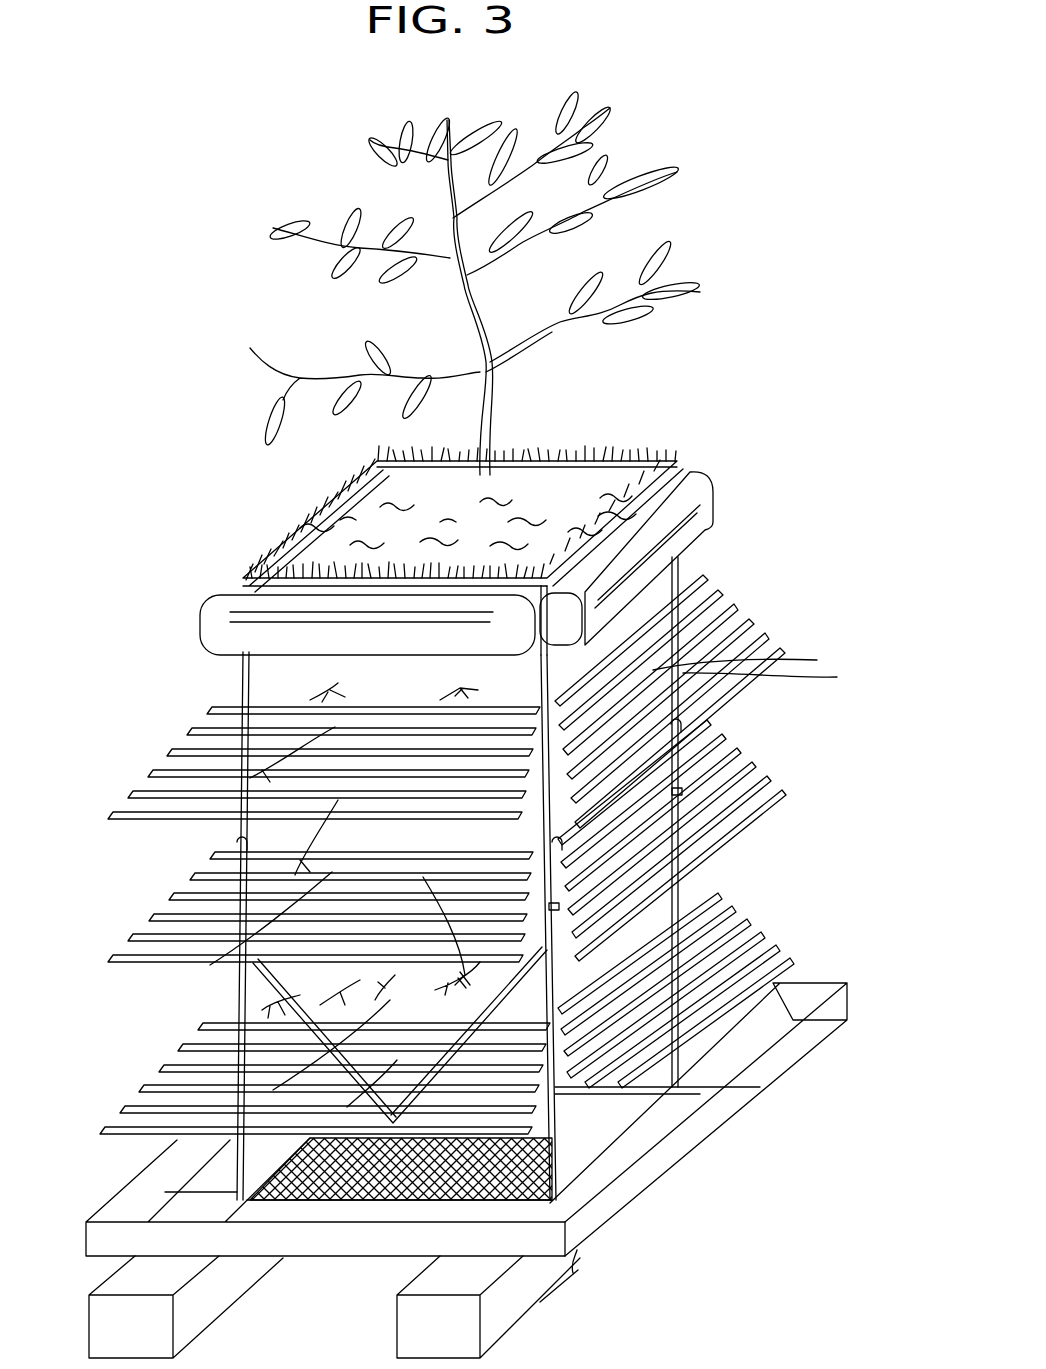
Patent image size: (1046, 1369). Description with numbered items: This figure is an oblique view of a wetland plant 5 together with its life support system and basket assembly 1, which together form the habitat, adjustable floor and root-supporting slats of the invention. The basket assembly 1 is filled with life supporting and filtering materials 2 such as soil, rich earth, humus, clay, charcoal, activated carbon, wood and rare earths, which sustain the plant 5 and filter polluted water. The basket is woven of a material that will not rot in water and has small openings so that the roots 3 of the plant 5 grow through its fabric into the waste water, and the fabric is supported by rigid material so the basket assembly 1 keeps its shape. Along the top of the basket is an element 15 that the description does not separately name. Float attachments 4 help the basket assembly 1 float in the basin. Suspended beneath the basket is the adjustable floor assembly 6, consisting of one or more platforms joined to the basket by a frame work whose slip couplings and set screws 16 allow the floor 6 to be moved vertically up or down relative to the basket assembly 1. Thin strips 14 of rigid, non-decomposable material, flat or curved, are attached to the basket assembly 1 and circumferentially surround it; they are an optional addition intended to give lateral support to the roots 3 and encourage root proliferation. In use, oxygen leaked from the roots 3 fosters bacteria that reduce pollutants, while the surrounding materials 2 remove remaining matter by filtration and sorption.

The basket assembly 1 is at (257, 573).
The life supporting and filtering materials 2 is at (433, 540).
The roots 3 is at (200, 965).
The float attachments 4 is at (697, 468).
The wetland plant 5 is at (683, 180).
The adjustable floor assembly 6 is at (673, 1163).
The thin strips 14 is at (118, 806).
The mulch layer 15 is at (597, 455).
The slip couplings and set screws 16 is at (700, 790).